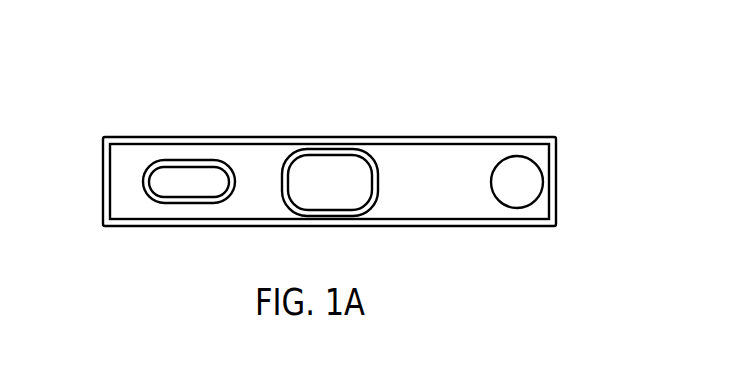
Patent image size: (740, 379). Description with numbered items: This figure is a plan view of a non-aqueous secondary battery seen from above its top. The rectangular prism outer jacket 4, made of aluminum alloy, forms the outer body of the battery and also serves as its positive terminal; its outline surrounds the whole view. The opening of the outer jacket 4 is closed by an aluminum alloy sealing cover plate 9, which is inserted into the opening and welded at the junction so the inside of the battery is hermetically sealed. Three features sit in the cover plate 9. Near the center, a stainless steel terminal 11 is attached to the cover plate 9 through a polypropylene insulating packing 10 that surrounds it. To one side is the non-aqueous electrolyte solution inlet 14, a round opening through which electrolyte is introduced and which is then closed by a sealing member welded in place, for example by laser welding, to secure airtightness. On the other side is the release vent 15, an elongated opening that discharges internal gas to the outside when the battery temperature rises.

The outer jacket 4 is at (559, 179).
The sealing cover plate 9 is at (445, 172).
The insulating packing 10 is at (377, 182).
The terminal 11 is at (333, 172).
The non-aqueous electrolyte solution inlet 14 is at (516, 170).
The release vent 15 is at (193, 180).